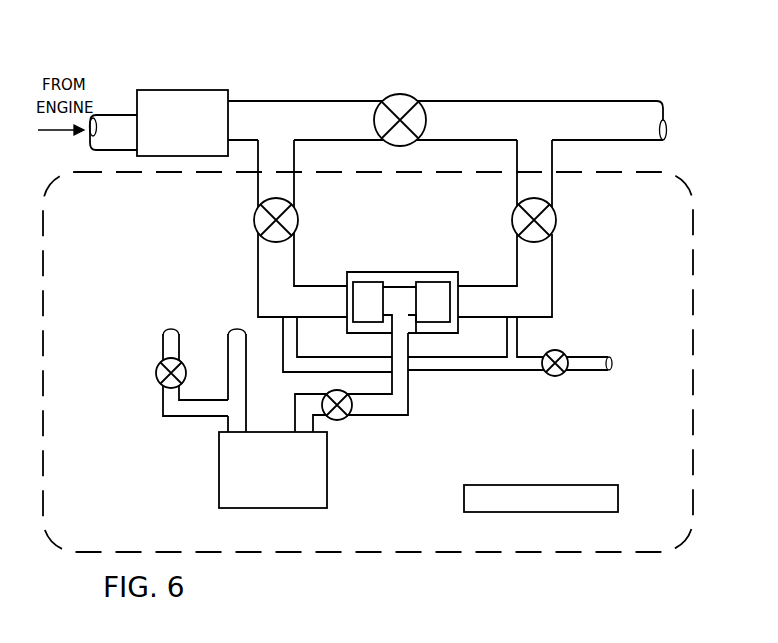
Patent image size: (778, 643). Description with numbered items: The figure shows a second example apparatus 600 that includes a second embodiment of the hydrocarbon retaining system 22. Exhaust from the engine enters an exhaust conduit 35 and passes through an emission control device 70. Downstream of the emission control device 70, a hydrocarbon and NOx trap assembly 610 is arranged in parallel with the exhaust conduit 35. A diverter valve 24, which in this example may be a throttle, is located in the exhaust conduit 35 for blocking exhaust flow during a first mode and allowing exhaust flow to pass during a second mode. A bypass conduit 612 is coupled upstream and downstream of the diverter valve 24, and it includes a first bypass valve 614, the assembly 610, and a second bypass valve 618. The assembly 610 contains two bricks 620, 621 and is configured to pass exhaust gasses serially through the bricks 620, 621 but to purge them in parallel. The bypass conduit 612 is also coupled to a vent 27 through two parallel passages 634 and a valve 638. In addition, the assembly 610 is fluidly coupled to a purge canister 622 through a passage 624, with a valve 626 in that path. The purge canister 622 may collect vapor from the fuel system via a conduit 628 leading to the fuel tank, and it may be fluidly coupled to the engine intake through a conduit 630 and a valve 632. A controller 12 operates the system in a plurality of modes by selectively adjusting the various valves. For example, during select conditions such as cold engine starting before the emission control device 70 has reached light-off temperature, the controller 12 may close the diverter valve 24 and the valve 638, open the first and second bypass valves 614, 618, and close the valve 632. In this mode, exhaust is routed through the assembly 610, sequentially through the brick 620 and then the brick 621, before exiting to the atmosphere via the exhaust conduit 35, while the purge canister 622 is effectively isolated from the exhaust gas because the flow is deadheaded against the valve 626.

The apparatus 600 is at (686, 80).
The hydrocarbon retaining system 22 is at (694, 252).
The emission control device 70 is at (173, 131).
The exhaust conduit 35 is at (247, 100).
The diverter valve 24 is at (393, 95).
The first bypass valve 614 is at (298, 226).
The second bypass valve 618 is at (556, 224).
The hydrocarbon and NOx trap assembly 610 is at (417, 284).
The first brick 620 is at (384, 282).
The second brick 621 is at (431, 282).
The bypass conduit 612 is at (580, 291).
The parallel passages 634 is at (297, 329).
The passage 624 is at (368, 416).
The valve 626 is at (326, 398).
The purge canister 622 is at (328, 476).
The conduit 628 is at (248, 375).
The conduit 630 is at (210, 418).
The valve 632 is at (157, 372).
The valve 638 is at (548, 352).
The vent 27 is at (580, 372).
The controller 12 is at (555, 485).